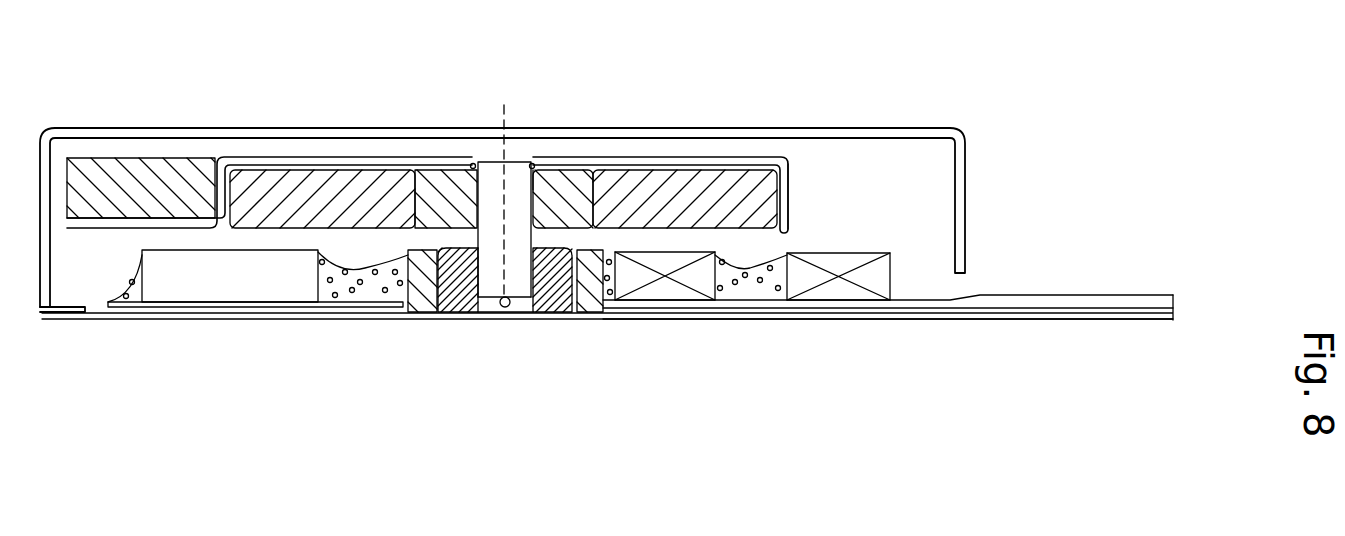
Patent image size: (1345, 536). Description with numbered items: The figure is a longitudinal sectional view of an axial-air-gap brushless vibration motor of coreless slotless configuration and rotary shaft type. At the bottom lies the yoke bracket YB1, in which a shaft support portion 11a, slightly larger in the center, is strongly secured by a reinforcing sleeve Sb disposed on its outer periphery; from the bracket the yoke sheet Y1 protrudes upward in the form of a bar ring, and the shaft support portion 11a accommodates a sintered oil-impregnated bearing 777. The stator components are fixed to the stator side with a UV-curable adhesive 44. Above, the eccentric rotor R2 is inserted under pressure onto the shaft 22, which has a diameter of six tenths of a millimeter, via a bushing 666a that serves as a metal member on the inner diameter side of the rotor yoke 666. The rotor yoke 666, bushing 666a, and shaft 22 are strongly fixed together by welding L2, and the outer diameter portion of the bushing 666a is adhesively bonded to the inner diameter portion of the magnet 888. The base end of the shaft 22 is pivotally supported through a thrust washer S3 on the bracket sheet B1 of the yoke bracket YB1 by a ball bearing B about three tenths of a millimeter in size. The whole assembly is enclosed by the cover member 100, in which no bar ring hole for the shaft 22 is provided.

The cover member 100 is at (283, 128).
The shaft 22 is at (490, 183).
The welding L2 is at (533, 170).
The bushing 666a is at (570, 190).
The rotor yoke 666 is at (740, 162).
The eccentric rotor R2 is at (800, 196).
The UV-curable adhesive 44 is at (295, 289).
The reinforcing sleeve Sb is at (402, 317).
The shaft support portion 11a is at (433, 318).
The ball bearing B is at (493, 310).
The thrust washer S3 is at (504, 307).
The bracket sheet B1 is at (533, 320).
The sintered oil-impregnated bearing 777 is at (587, 313).
The magnet 888 is at (657, 205).
The yoke sheet Y1 is at (730, 310).
The yoke bracket YB1 is at (812, 318).